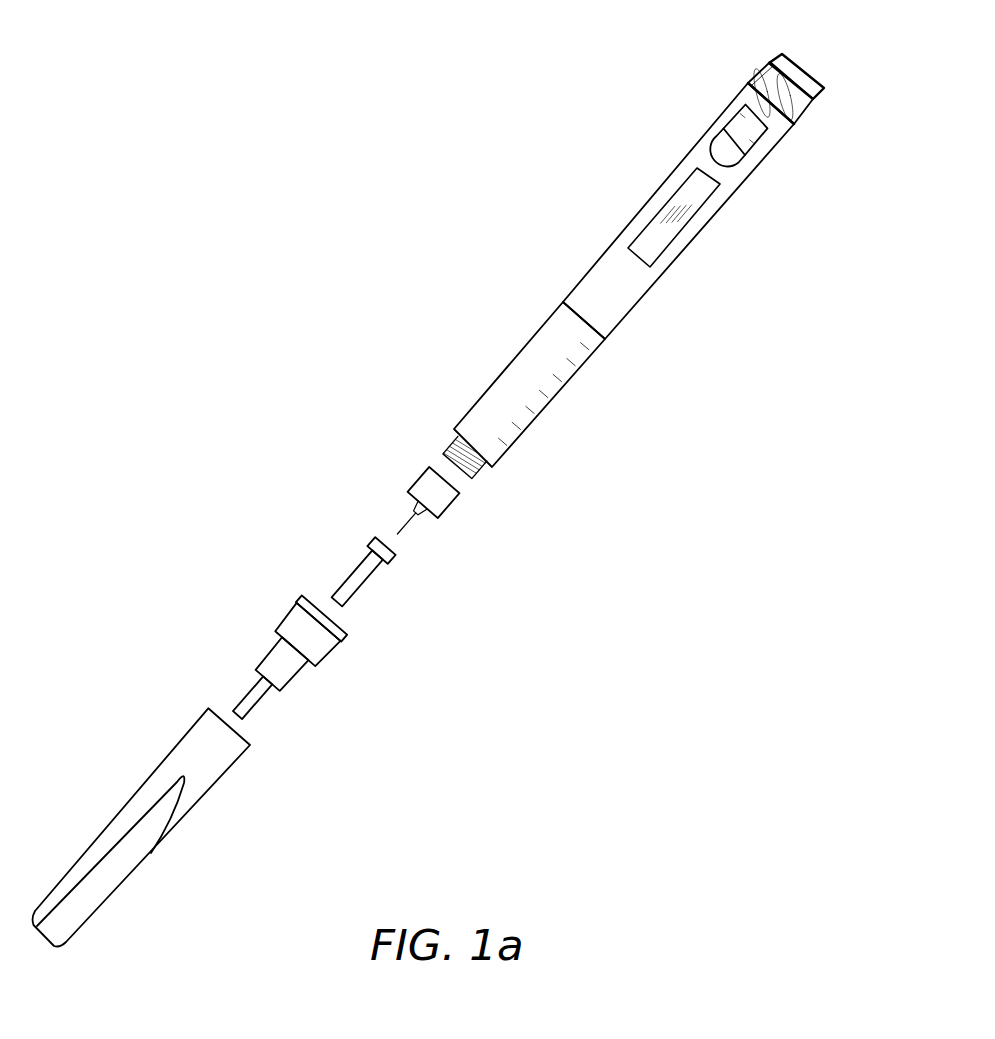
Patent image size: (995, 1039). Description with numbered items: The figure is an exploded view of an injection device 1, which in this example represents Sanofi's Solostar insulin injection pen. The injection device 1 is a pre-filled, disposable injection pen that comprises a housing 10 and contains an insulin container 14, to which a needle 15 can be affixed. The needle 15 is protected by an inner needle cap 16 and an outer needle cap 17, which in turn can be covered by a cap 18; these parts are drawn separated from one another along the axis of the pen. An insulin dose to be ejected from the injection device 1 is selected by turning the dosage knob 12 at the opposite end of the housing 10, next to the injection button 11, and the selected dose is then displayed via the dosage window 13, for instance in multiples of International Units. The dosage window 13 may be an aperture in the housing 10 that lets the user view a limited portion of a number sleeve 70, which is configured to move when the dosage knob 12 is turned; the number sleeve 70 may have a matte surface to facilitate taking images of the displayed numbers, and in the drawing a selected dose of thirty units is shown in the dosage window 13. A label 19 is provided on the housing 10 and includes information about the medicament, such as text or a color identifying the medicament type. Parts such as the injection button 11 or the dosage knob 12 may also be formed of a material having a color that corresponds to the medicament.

The injection device 1 is at (491, 254).
The housing 10 is at (640, 217).
The injection button 11 is at (810, 58).
The dosage knob 12 is at (747, 61).
The dosage window 13 is at (714, 131).
The insulin container 14 is at (516, 368).
The needle 15 is at (424, 480).
The inner needle cap 16 is at (356, 575).
The outer needle cap 17 is at (294, 621).
The cap 18 is at (184, 739).
The label 19 is at (676, 186).
The number sleeve 70 is at (744, 106).